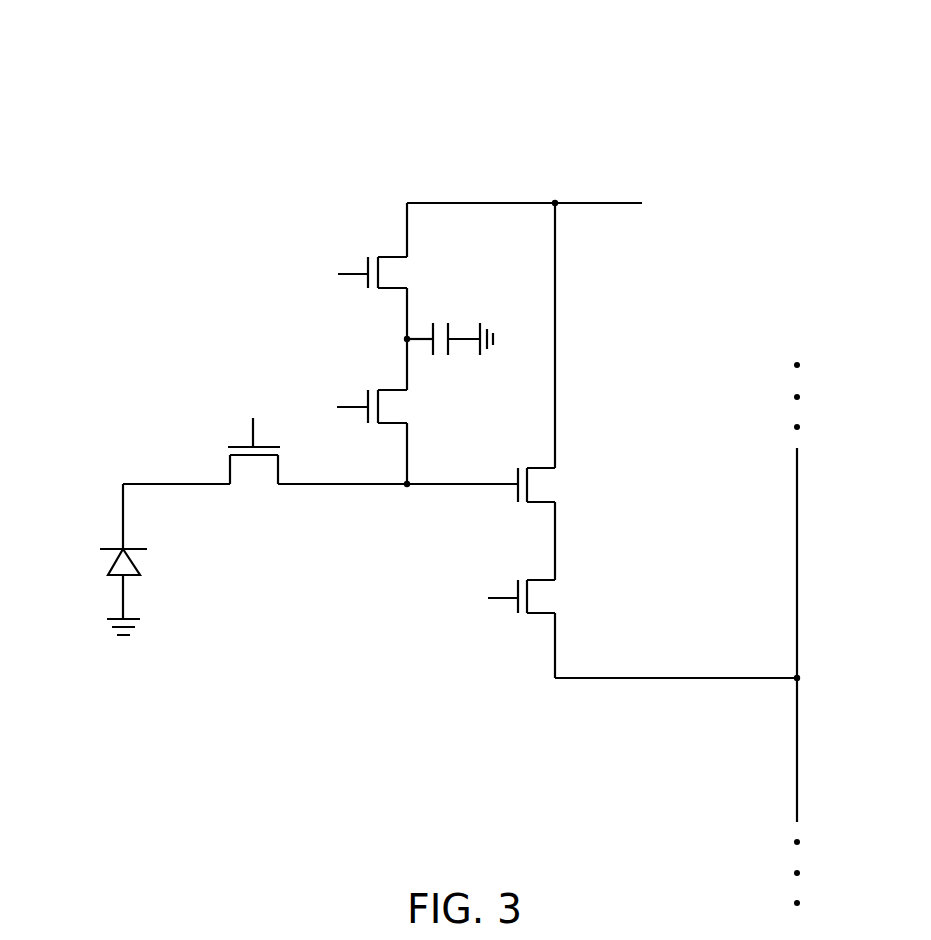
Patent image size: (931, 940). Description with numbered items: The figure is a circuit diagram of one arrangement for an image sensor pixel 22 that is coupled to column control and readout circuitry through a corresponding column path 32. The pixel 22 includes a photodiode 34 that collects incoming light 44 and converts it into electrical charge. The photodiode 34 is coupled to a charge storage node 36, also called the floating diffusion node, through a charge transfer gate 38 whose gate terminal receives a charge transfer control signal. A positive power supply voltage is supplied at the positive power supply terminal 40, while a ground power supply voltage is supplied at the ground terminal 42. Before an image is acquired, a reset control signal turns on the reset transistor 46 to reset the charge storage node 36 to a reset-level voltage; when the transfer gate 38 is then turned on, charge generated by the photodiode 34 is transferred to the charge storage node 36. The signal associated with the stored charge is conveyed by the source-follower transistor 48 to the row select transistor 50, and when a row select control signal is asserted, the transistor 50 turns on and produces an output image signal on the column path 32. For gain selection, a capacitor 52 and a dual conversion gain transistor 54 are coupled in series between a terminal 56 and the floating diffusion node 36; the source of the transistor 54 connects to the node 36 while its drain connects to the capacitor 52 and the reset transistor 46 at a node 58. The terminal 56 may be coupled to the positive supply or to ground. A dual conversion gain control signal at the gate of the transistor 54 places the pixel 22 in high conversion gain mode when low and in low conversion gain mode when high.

The image sensor pixel 22 is at (557, 117).
The column path 32 is at (797, 568).
The photodiode 34 is at (156, 571).
The charge storage node 36 is at (400, 521).
The charge transfer gate 38 is at (259, 487).
The positive power supply terminal 40 is at (620, 203).
The ground terminal 42 is at (153, 644).
The incoming light 44 is at (67, 545).
The reset transistor 46 is at (402, 272).
The source-follower transistor 48 is at (558, 485).
The row select transistor 50 is at (558, 597).
The capacitor 52 is at (441, 356).
The dual conversion gain transistor 54 is at (402, 408).
The terminal 56 is at (499, 332).
The node 58 is at (405, 339).